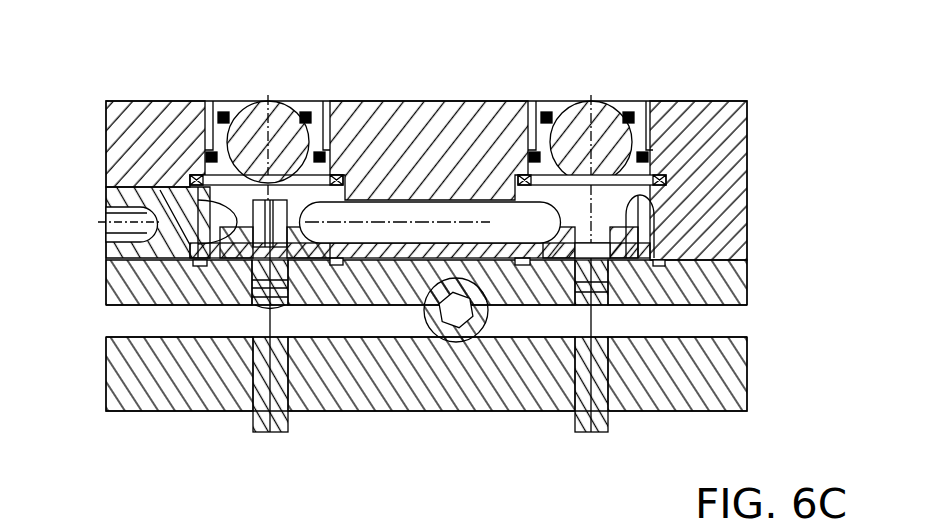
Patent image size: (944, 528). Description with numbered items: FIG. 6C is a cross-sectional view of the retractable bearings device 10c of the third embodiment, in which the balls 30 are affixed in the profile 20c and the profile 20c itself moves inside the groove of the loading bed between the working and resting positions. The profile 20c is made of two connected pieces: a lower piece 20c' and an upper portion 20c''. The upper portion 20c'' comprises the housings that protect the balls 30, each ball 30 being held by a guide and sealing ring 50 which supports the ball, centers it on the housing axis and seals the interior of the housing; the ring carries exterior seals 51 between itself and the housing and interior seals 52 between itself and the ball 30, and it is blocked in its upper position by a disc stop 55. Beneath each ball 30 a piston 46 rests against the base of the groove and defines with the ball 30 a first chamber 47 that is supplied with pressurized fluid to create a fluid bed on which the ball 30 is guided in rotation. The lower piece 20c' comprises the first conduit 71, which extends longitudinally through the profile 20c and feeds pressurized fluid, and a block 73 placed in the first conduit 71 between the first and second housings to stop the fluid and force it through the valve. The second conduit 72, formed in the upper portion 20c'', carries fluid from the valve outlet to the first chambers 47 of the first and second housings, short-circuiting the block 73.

The retractable bearings device 10c is at (90, 98).
The profile 20c is at (464, 224).
The upper portion 20c'' is at (464, 180).
The lower piece 20c' is at (463, 374).
The ball 30 is at (281, 104).
The piston 46 is at (262, 427).
The first chamber 47 is at (238, 206).
The guide and sealing ring 50 is at (634, 100).
The exterior seal 51 is at (192, 175).
The interior seal 52 is at (220, 112).
The disc stop 55 is at (368, 175).
The first conduit 71 is at (708, 318).
The second conduit 72 is at (468, 202).
The block 73 is at (457, 342).